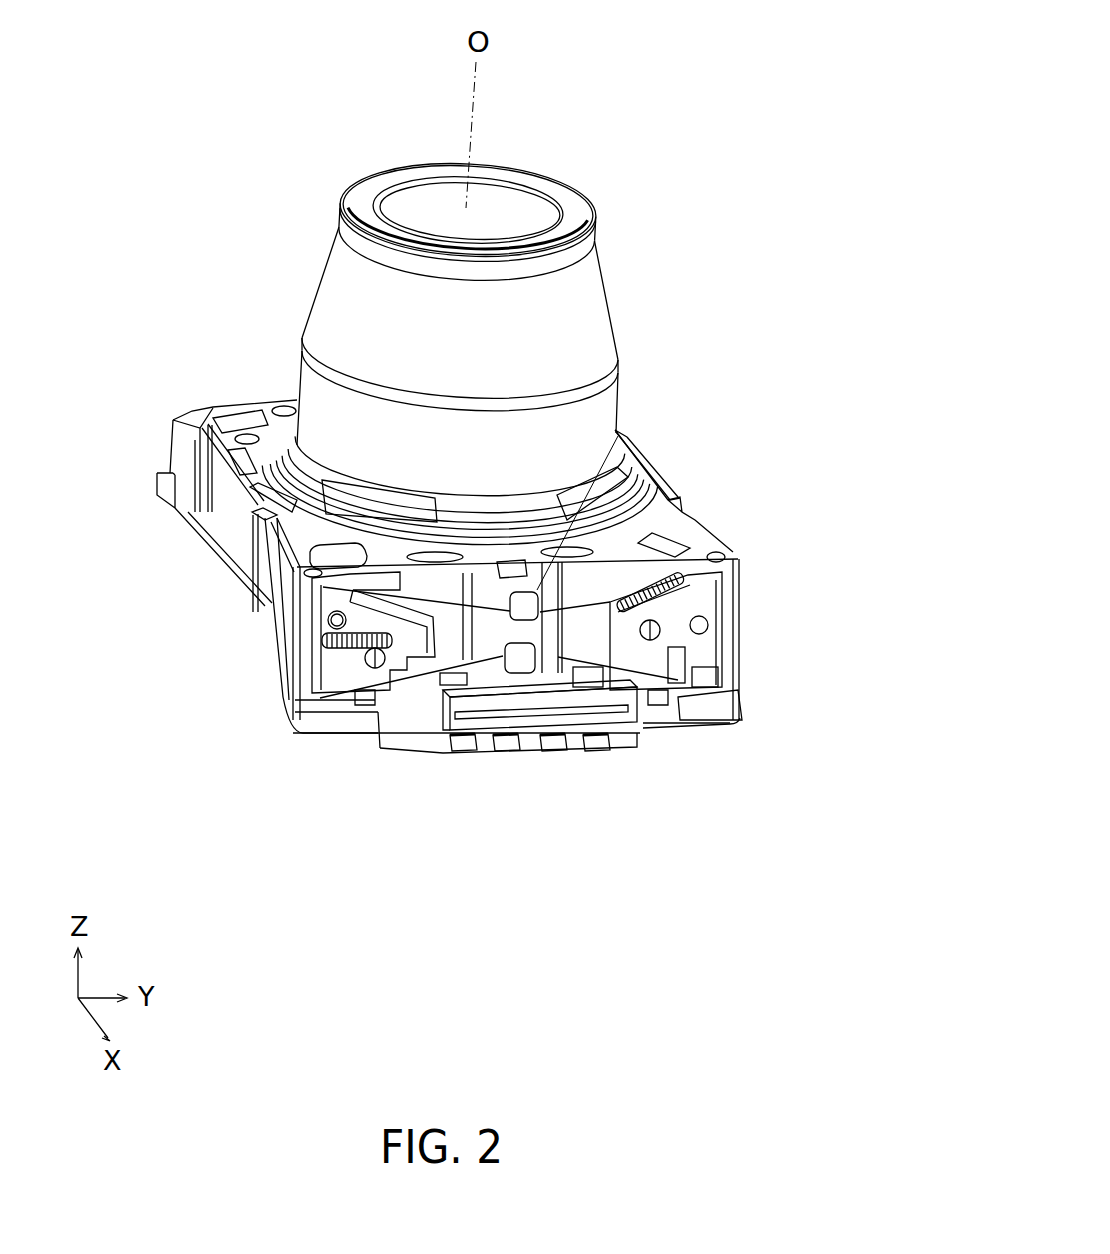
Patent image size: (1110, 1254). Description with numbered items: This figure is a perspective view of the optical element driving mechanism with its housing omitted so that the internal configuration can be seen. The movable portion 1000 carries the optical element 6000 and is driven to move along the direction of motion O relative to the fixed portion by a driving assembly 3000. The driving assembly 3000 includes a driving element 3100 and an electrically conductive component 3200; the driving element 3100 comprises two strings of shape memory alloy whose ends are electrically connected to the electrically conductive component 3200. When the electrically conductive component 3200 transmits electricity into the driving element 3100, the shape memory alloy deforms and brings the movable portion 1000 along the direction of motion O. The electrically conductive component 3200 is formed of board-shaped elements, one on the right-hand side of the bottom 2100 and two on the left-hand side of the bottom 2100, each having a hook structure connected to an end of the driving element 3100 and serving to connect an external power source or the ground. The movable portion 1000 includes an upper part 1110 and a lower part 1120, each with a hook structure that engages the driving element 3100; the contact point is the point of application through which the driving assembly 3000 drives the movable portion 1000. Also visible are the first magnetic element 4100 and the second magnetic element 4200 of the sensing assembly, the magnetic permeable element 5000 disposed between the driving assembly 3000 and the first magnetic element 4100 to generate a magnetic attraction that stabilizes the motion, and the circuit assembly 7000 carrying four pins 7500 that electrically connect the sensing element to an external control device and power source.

The movable portion 1000 is at (225, 510).
The upper part 1110 is at (622, 430).
The lower part 1120 is at (525, 658).
The bottom 2100 is at (278, 712).
The driving assembly 3000 is at (777, 8).
The driving element 3100 is at (275, 557).
The electrically conductive component 3200 is at (463, 750).
The first magnetic element 4100 is at (553, 627).
The second magnetic element 4200 is at (402, 650).
The magnetic permeable element 5000 is at (437, 585).
The optical element 6000 is at (413, 203).
The circuit assembly 7000 is at (660, 720).
The pins 7500 is at (598, 748).